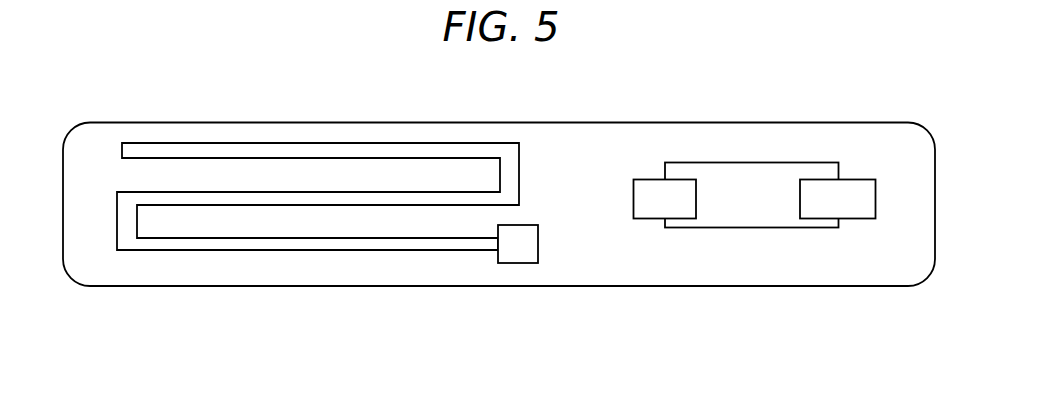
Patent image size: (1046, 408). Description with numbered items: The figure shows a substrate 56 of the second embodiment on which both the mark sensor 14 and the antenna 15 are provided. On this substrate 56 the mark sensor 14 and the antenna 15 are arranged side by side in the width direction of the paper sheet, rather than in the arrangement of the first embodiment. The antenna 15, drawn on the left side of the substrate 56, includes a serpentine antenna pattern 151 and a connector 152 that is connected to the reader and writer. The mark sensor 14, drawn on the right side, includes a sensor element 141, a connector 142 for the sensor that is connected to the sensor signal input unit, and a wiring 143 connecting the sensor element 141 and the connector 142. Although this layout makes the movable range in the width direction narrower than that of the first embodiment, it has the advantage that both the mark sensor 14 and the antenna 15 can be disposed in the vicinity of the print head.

The substrate 56 is at (655, 116).
The antenna 15 is at (332, 273).
The antenna pattern 151 is at (239, 251).
The connector 152 is at (519, 290).
The mark sensor 14 is at (755, 283).
The sensor element 141 is at (838, 268).
The connector for sensor 142 is at (650, 207).
The wiring 143 is at (750, 227).